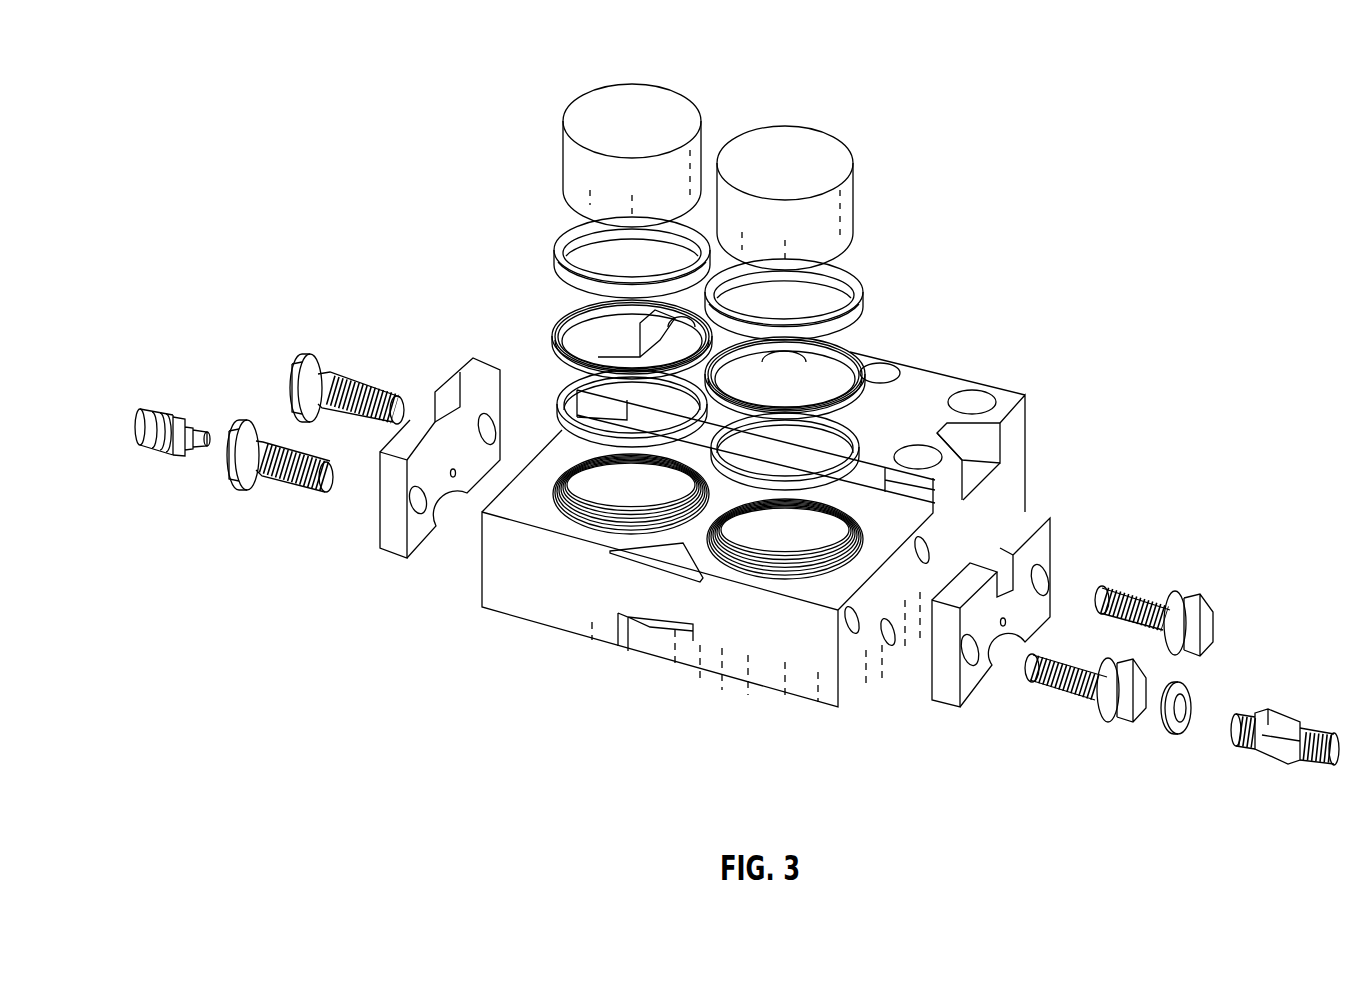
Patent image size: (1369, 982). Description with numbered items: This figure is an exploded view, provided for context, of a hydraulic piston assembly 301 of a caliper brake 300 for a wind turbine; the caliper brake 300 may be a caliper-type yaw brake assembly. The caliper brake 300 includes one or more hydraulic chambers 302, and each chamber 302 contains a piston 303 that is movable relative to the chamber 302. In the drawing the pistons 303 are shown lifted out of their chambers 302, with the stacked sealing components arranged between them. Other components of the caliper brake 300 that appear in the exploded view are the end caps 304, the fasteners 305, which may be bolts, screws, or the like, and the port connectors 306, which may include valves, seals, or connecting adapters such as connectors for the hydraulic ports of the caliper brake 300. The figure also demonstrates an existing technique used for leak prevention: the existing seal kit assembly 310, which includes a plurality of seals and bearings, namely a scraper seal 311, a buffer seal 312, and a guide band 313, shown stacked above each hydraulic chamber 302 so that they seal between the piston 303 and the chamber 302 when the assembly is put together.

The caliper brake 300 is at (277, 77).
The hydraulic piston assembly 301 is at (510, 221).
The hydraulic chamber 302 is at (783, 570).
The piston 303 is at (793, 140).
The end cap 304 is at (945, 697).
The fastener 305 is at (1060, 697).
The port connector 306 is at (172, 412).
The seal kit assembly 310 is at (541, 240).
The scraper seal 311 is at (857, 270).
The buffer seal 312 is at (852, 349).
The guide band 313 is at (860, 418).